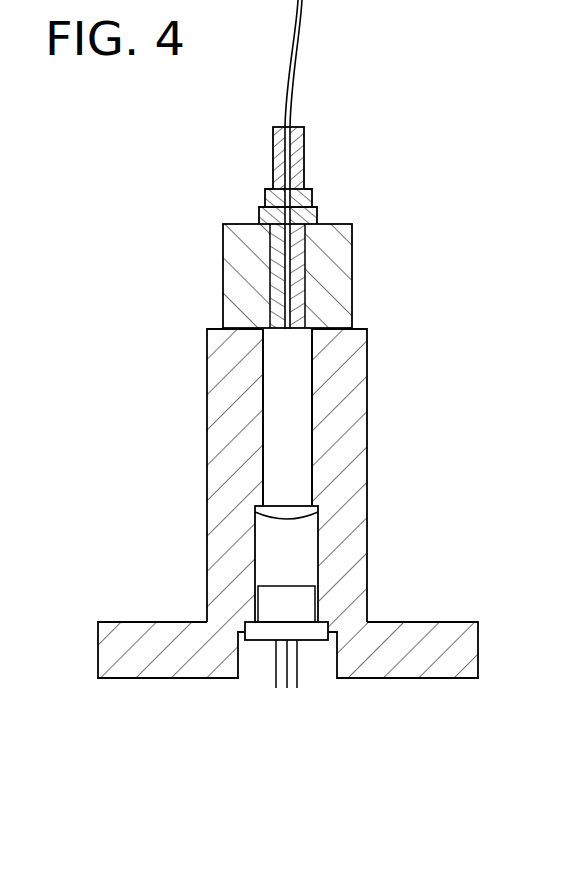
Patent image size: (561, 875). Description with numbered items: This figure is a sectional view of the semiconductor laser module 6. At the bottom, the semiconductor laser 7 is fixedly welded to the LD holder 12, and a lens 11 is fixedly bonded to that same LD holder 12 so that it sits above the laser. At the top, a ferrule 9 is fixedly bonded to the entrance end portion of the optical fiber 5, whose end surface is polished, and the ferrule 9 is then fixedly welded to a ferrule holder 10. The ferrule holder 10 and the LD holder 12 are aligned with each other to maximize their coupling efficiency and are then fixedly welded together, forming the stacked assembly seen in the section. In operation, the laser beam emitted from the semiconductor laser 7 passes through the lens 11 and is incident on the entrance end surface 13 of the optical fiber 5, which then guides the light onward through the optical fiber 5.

The optical fiber 5 is at (293, 88).
The semiconductor laser module 6 is at (392, 354).
The semiconductor laser 7 is at (313, 633).
The ferrule 9 is at (304, 162).
The ferrule holder 10 is at (353, 233).
The lens 11 is at (318, 510).
The LD holder 12 is at (367, 590).
The entrance end surface 13 is at (285, 331).